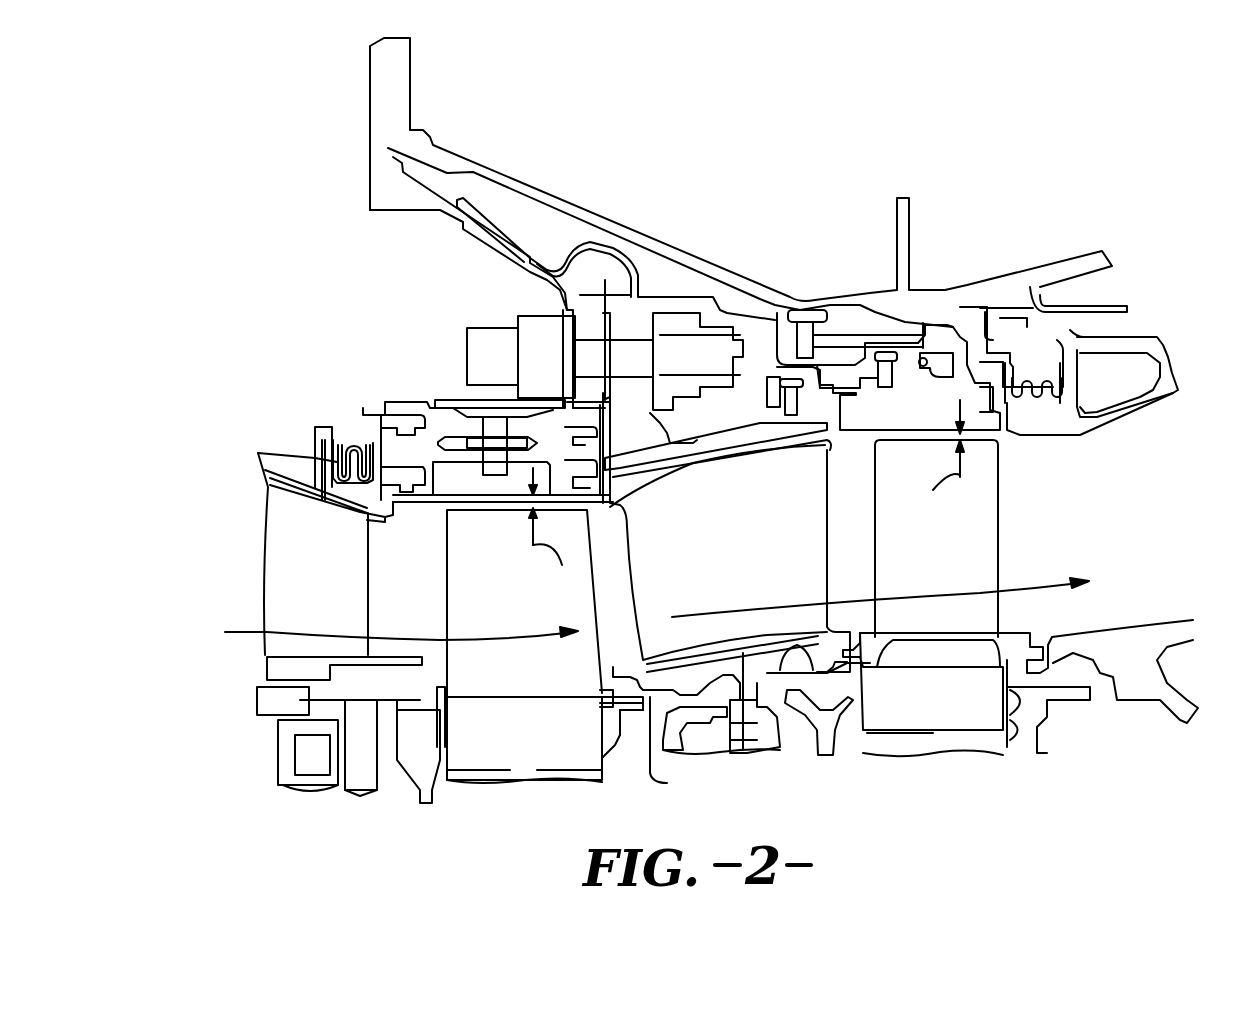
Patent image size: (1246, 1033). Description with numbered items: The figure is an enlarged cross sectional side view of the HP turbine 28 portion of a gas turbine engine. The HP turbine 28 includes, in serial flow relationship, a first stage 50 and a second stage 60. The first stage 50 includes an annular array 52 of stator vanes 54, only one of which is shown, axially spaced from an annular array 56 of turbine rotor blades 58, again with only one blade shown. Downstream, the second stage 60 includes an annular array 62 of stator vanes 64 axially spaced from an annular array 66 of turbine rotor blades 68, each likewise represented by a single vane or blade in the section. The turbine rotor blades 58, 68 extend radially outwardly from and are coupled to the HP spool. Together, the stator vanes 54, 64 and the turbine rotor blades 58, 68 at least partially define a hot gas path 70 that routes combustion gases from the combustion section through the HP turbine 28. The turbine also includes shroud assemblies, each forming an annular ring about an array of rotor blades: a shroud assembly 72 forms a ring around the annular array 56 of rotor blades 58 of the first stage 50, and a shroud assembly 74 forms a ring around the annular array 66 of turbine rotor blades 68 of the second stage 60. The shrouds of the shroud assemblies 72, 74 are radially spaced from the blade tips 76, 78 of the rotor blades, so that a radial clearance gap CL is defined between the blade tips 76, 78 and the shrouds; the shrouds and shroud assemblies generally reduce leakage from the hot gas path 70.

The HP turbine 28 is at (855, 160).
The first stage 50 is at (410, 817).
The annular array of stator vanes 52 is at (258, 535).
The stator vane 54 is at (333, 582).
The annular array of turbine rotor blades 56 is at (443, 598).
The turbine rotor blade 58 is at (527, 620).
The second stage 60 is at (757, 773).
The annular array of stator vanes 62 is at (628, 547).
The stator vane 64 is at (745, 553).
The annular array of turbine rotor blades 66 is at (1000, 562).
The turbine rotor blade 68 is at (950, 570).
The hot gas path 70 is at (247, 630).
The shroud assembly 72 is at (402, 388).
The shroud assembly 74 is at (947, 373).
The blade tip 76 is at (492, 508).
The blade tip 78 is at (932, 442).